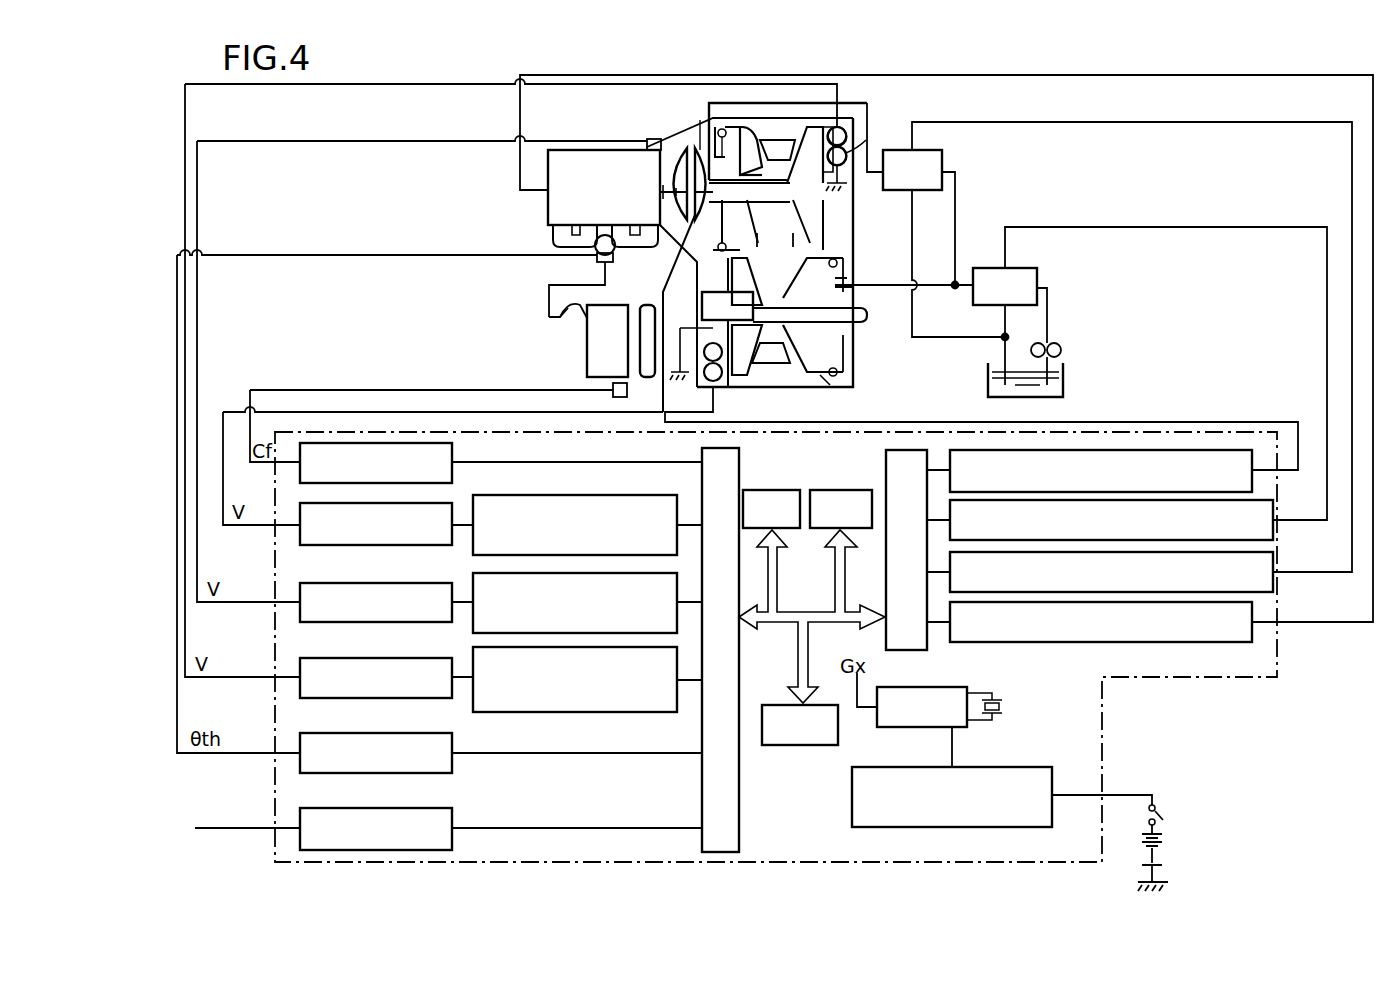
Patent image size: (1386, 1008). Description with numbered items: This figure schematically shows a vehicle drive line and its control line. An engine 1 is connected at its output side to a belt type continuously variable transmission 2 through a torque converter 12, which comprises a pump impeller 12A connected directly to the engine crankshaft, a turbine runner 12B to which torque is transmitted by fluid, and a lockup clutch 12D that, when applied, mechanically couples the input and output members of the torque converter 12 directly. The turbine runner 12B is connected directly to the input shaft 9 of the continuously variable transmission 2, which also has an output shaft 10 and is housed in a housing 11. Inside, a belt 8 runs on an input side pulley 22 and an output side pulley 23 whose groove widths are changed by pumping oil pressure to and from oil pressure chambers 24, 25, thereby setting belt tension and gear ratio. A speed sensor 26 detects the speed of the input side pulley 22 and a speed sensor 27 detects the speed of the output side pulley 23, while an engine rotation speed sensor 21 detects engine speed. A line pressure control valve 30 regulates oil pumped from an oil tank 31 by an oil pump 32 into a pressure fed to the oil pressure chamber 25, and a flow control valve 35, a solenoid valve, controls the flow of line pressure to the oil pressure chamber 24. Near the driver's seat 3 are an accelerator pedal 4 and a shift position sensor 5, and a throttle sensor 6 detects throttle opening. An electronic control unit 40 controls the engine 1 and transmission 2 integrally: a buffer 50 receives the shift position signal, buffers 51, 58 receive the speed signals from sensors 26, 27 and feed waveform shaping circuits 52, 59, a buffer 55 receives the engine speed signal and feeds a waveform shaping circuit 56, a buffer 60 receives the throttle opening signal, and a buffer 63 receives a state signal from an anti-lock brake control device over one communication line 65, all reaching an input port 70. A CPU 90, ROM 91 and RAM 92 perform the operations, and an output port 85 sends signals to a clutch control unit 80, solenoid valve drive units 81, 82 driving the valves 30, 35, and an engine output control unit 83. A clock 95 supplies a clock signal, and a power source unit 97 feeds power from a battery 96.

The engine 1 is at (560, 200).
The continuously variable transmission 2 is at (732, 140).
The driver's seat 3 is at (606, 318).
The accelerator pedal 4 is at (575, 312).
The shift position sensor 5 is at (627, 390).
The throttle sensor 6 is at (597, 262).
The belt 8 is at (772, 375).
The input shaft 9 is at (800, 188).
The output shaft 10 is at (845, 322).
The housing 11 is at (790, 376).
The torque converter 12 is at (680, 160).
The pump impeller 12A is at (660, 145).
The turbine runner 12B is at (700, 150).
The lockup clutch 12D is at (678, 240).
The engine rotation speed sensor 21 is at (647, 143).
The input side pulley 22 is at (815, 233).
The output side pulley 23 is at (840, 340).
The oil pressure chamber 24 is at (832, 128).
The oil pressure chamber 25 is at (830, 378).
The speed sensor 26 is at (866, 140).
The speed sensor 27 is at (716, 380).
The line pressure control valve 30 is at (1025, 282).
The oil tank 31 is at (1063, 378).
The oil pump 32 is at (1058, 343).
The flow control valve 35 is at (935, 158).
The electronic control unit 40 is at (1135, 677).
The buffer 50 is at (445, 462).
The buffer 51 is at (345, 545).
The waveform shaping circuit 52 is at (542, 497).
The buffer 55 is at (356, 584).
The waveform shaping circuit 56 is at (478, 575).
The buffer 58 is at (360, 658).
The waveform shaping circuit 59 is at (478, 655).
The buffer 60 is at (396, 733).
The buffer 63 is at (398, 808).
The communication line 65 is at (245, 828).
The input port 70 is at (730, 458).
The clutch control unit 80 is at (1240, 478).
The solenoid valve drive unit 81 is at (1252, 534).
The solenoid valve drive unit 82 is at (1245, 586).
The engine output control unit 83 is at (1242, 632).
The output port 85 is at (886, 462).
The CPU 90 is at (796, 745).
The ROM 91 is at (772, 492).
The RAM 92 is at (840, 492).
The clock 95 is at (902, 688).
The battery 96 is at (1164, 830).
The power source unit 97 is at (996, 768).